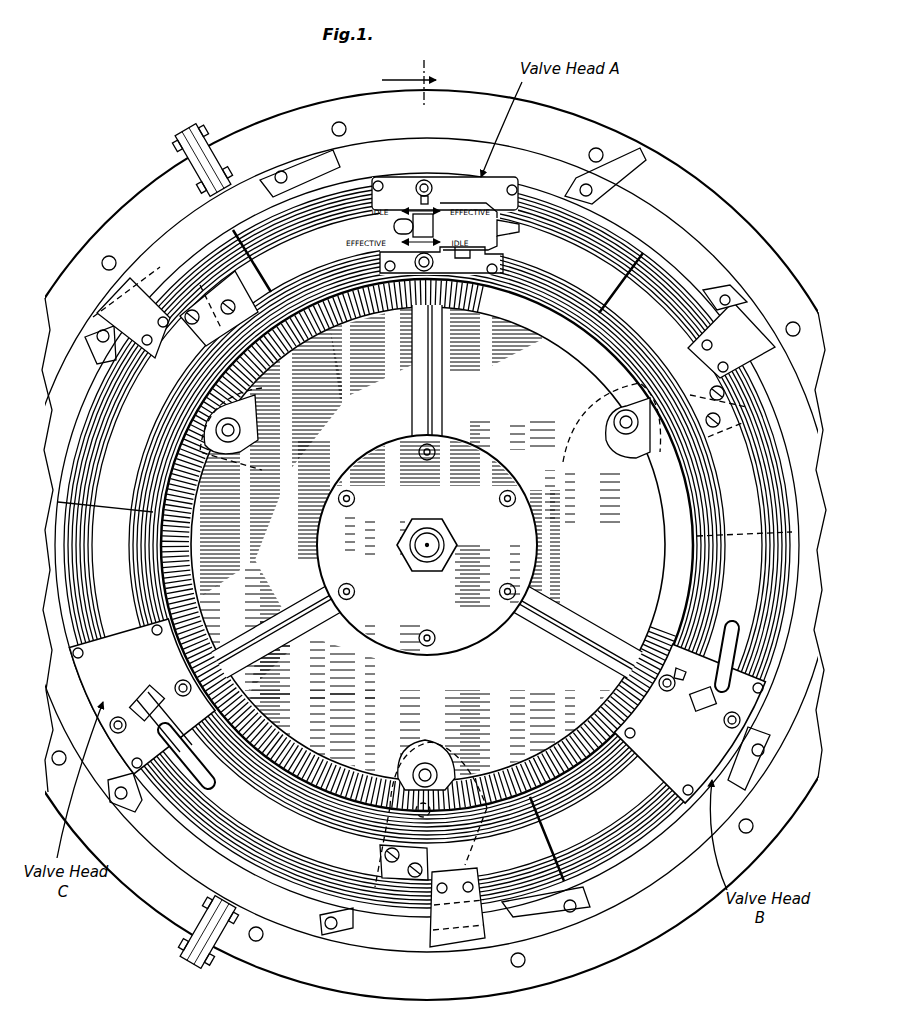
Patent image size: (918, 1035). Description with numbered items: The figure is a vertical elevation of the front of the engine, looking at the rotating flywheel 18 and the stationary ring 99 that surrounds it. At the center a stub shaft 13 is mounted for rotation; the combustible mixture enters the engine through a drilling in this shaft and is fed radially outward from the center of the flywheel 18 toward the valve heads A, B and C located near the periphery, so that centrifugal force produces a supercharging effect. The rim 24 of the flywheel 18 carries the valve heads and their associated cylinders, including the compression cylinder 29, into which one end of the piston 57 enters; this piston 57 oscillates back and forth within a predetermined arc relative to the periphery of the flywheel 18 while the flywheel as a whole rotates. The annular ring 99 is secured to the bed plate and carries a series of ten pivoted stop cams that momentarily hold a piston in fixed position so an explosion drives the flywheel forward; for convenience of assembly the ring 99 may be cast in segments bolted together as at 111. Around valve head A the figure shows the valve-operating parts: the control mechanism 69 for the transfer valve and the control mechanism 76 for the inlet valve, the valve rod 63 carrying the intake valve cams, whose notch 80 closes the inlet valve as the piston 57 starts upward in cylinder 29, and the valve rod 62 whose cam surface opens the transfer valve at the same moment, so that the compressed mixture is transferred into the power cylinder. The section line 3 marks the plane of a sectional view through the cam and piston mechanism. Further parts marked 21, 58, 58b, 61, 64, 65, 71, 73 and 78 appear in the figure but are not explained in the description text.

The annular ring 99 is at (266, 132).
The segment bolting joint 111 is at (190, 133).
The section line 3- 3 is at (434, 1034).
The outer vane ring band 58b is at (737, 488).
The control mechanism for inlet valve 76 is at (418, 288).
The compression cylinder 29 is at (298, 320).
The stator segment band 58 is at (346, 302).
The rim 24 is at (192, 597).
The flywheel 18 is at (312, 416).
The hub plate 21 is at (530, 542).
The stub shaft 13 is at (430, 530).
The valve head top bar 71 is at (438, 206).
The control mechanism for transfer valve 69 is at (425, 180).
The pin stem 65 is at (430, 196).
The shuttle block 64 is at (420, 220).
The valve rod 62 is at (478, 206).
The tab 61 is at (519, 231).
The valve rod 63 is at (473, 262).
The pivot 73 is at (426, 272).
The pivot screw 78 is at (412, 266).
The notch 80 is at (470, 260).
The piston 57 is at (270, 356).